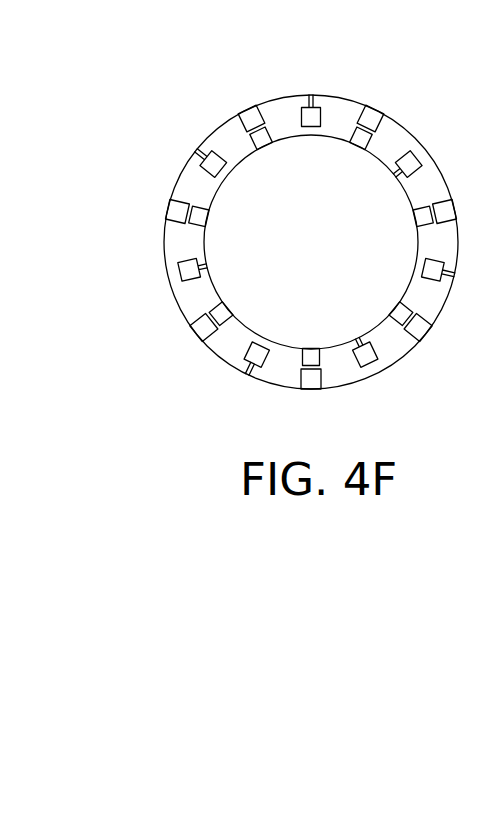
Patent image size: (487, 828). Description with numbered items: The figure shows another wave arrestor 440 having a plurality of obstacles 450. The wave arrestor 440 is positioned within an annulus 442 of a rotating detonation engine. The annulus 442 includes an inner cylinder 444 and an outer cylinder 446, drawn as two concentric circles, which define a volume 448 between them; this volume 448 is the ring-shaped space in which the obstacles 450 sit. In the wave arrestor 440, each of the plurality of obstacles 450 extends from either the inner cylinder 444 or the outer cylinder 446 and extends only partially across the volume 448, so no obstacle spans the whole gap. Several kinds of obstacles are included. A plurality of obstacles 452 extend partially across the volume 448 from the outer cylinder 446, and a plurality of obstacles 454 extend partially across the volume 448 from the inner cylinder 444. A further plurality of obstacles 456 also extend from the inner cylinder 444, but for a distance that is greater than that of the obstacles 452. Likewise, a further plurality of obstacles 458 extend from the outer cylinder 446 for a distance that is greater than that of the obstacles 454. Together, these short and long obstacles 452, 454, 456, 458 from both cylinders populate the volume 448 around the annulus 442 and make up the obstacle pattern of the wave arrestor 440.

The wave arrestor 440 is at (124, 161).
The annulus 442 is at (234, 116).
The inner cylinder 444 is at (254, 150).
The outer cylinder 446 is at (280, 98).
The volume 448 is at (292, 111).
The plurality of obstacles 450 is at (196, 282).
The plurality of obstacles 452 is at (172, 207).
The plurality of obstacles 454 is at (200, 223).
The plurality of obstacles 456 is at (216, 153).
The plurality of obstacles 458 is at (179, 265).